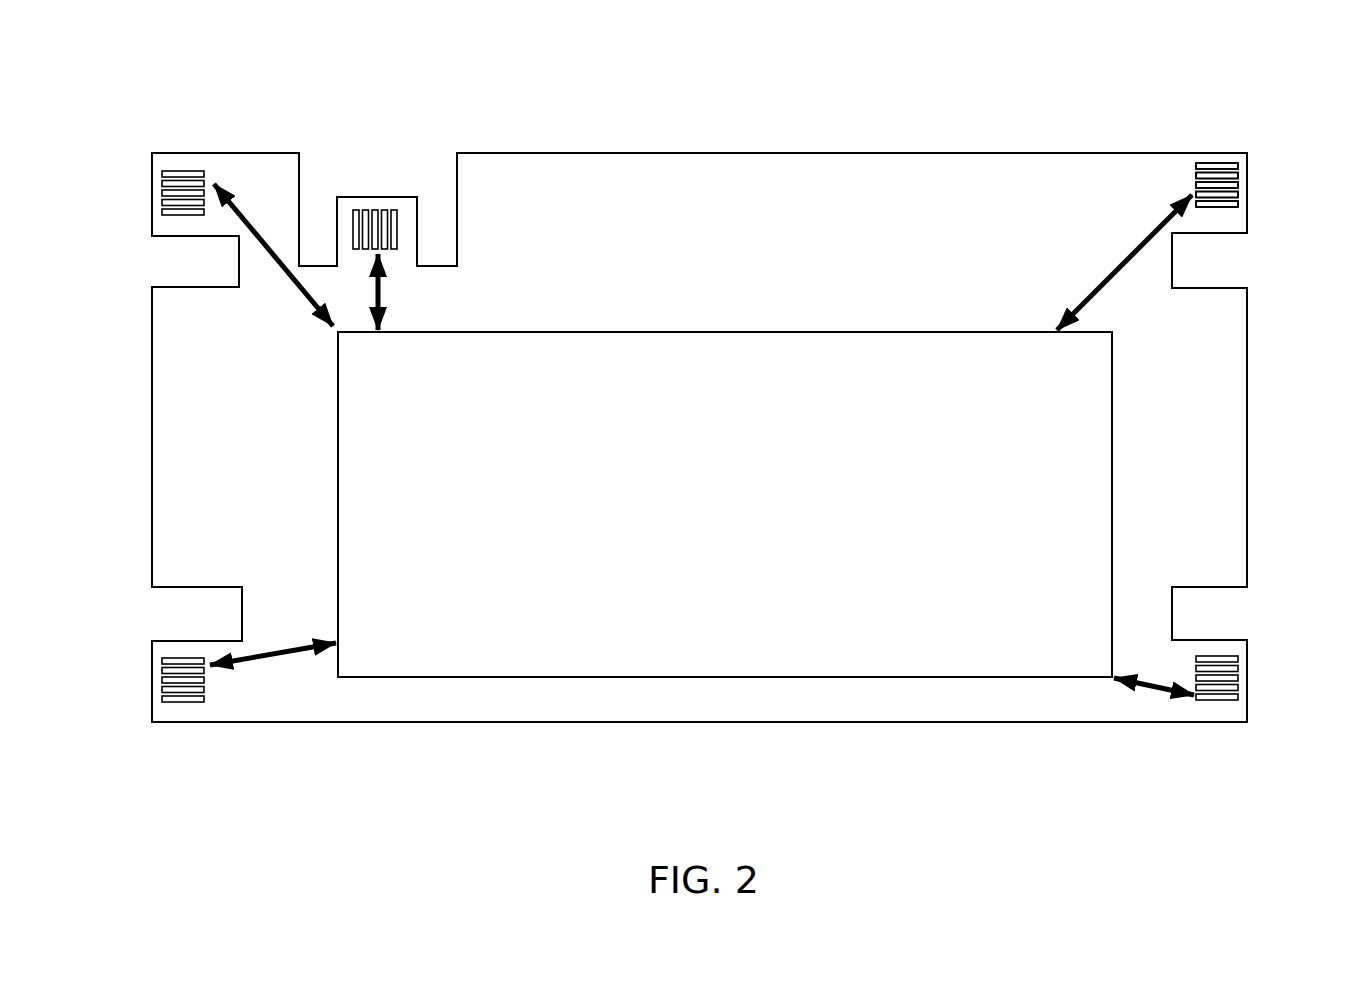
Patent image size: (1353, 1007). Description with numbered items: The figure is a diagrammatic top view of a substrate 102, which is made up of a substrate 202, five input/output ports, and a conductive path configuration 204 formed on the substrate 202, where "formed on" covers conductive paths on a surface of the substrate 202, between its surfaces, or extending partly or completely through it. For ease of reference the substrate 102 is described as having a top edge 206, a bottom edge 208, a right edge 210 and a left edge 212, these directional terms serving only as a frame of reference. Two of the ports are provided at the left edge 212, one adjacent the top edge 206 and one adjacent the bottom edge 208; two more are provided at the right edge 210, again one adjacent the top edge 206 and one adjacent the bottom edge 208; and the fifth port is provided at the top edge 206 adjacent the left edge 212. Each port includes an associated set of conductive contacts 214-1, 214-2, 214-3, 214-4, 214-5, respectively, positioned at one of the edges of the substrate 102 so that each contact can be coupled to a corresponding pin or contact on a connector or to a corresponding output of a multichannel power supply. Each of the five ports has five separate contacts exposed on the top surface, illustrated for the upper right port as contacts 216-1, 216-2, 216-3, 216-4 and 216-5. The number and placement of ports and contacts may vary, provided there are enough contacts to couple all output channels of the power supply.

The substrate 102 is at (709, 66).
The substrate 202 is at (744, 152).
The conductive path configuration 204 is at (725, 504).
The top edge 206 is at (581, 150).
The bottom edge 208 is at (773, 725).
The right edge 210 is at (1250, 431).
The left edge 212 is at (150, 449).
The set of conductive contacts 214-1 is at (155, 175).
The set of conductive contacts 214-2 is at (155, 665).
The set of conductive contacts 214-3 is at (1240, 183).
The set of conductive contacts 214-4 is at (1240, 665).
The set of conductive contacts 214-5 is at (379, 203).
The contact 216-1 is at (1196, 167).
The contact 216-2 is at (1196, 176).
The contact 216-3 is at (1196, 186).
The contact 216-4 is at (1237, 195).
The contact 216-5 is at (1235, 207).